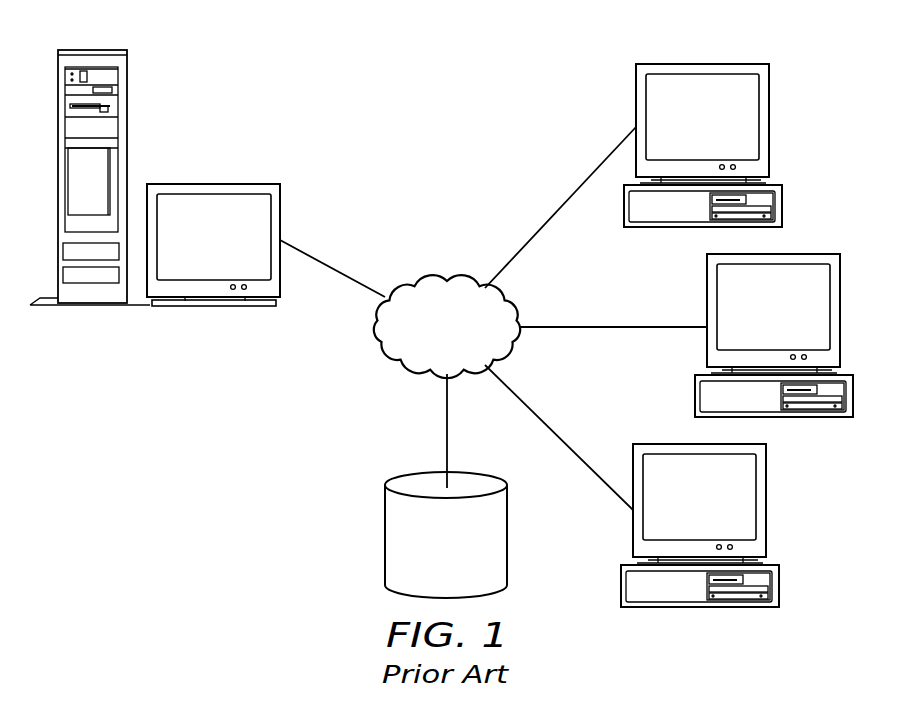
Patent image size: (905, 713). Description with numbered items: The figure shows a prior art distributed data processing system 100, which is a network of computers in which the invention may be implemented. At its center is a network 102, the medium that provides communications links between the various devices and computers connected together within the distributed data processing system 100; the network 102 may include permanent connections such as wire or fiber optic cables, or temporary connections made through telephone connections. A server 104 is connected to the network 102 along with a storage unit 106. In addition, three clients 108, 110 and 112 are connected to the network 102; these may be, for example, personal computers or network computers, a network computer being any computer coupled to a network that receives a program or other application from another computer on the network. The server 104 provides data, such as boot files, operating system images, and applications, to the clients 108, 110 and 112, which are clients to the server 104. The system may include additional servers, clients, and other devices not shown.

The distributed data processing system 100 is at (219, 485).
The network 102 is at (430, 339).
The server 104 is at (231, 250).
The storage unit 106 is at (431, 561).
The client 108 is at (685, 132).
The client 110 is at (757, 321).
The client 112 is at (684, 510).